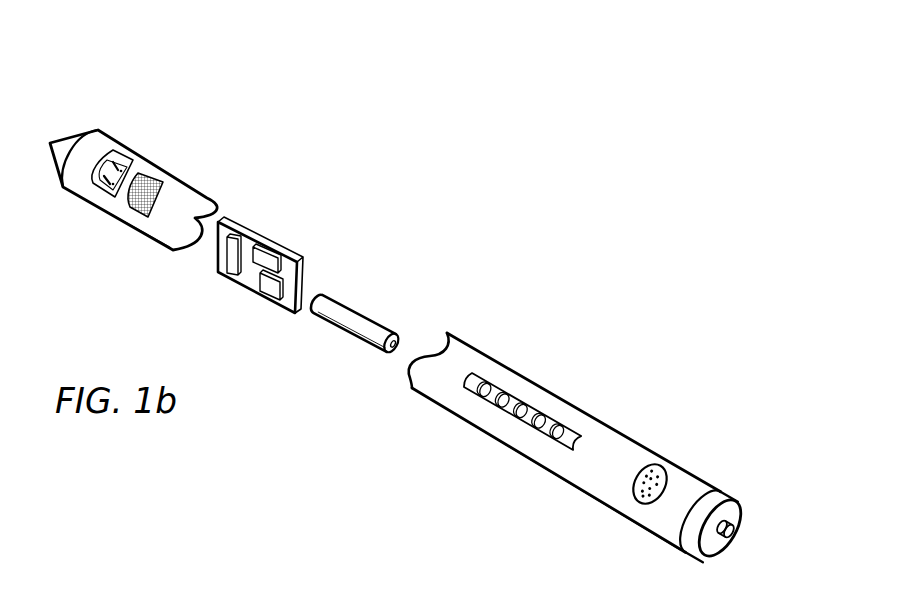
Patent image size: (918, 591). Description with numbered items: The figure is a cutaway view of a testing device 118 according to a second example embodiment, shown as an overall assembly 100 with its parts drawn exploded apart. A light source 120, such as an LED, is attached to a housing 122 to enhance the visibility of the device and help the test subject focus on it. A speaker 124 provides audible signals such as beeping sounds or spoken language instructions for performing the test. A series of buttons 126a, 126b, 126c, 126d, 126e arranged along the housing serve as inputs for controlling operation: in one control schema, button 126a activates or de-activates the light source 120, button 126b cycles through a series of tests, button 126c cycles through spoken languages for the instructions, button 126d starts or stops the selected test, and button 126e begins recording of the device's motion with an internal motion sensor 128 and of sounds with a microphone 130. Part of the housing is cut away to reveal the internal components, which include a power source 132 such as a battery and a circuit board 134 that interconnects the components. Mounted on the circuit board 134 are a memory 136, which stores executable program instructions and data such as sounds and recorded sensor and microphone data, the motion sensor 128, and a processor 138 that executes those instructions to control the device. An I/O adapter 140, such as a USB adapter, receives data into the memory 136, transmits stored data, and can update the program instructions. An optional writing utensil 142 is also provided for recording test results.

The electronic writing instrument 100 is at (706, 11).
The device 118 is at (609, 231).
The light source 120 is at (740, 525).
The housing 122 is at (638, 438).
The speaker 124 is at (653, 467).
The button 126a is at (553, 430).
The button 126b is at (532, 413).
The button 126c is at (513, 393).
The button 126d is at (495, 385).
The button 126e is at (478, 377).
The motion sensor 128 is at (228, 227).
The microphone 130 is at (157, 170).
The power source 132 is at (363, 313).
The circuit board 134 is at (240, 287).
The memory 136 is at (278, 282).
The processor 138 is at (272, 247).
The I/O adapter 140 is at (117, 140).
The writing utensil 142 is at (50, 143).